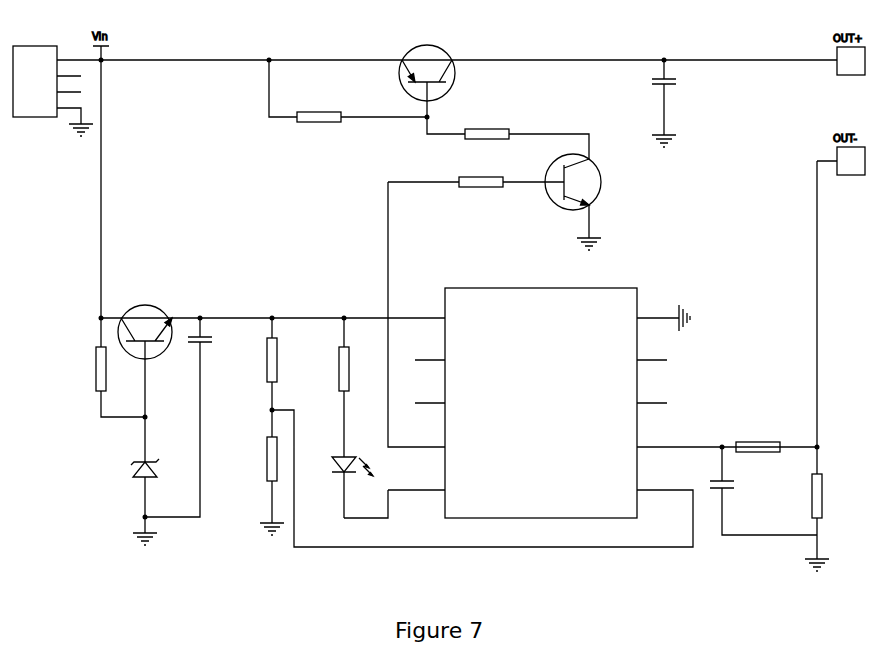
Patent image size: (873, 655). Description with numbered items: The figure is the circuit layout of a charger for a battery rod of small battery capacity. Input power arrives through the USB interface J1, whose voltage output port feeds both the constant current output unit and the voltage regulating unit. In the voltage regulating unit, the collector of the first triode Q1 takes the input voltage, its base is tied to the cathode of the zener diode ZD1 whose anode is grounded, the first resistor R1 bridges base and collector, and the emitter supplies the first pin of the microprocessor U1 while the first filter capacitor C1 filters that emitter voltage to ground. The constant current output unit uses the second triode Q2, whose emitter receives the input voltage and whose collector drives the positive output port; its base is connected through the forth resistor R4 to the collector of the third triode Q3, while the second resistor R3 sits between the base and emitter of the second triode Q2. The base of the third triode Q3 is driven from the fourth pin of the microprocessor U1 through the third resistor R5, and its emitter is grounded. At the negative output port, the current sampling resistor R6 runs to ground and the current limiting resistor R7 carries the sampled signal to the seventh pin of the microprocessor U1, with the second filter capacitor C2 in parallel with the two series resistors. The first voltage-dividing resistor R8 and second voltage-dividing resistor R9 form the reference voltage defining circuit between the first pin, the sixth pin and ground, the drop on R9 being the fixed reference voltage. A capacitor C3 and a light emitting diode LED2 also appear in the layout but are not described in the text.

The USB interface J1 is at (53, 83).
The first triode Q1 is at (145, 373).
The second triode Q2 is at (410, 81).
The third triode Q3 is at (565, 202).
The first resistor R1 is at (111, 367).
The second resistor R3 is at (348, 258).
The forth resistor R4 is at (508, 137).
The third resistor R5 is at (476, 191).
The current sampling resistor R6 is at (823, 522).
The current limiting resistor R7 is at (758, 438).
The first voltage-dividing resistor R8 is at (256, 377).
The second voltage-dividing resistor R9 is at (259, 486).
The first filter capacitor C1 is at (188, 417).
The second filter capacitor C2 is at (763, 491).
The capacitor C3 is at (674, 103).
The zener diode ZD1 is at (127, 502).
The light emitting diode LED2 is at (337, 475).
The microprocessor U1 is at (552, 396).